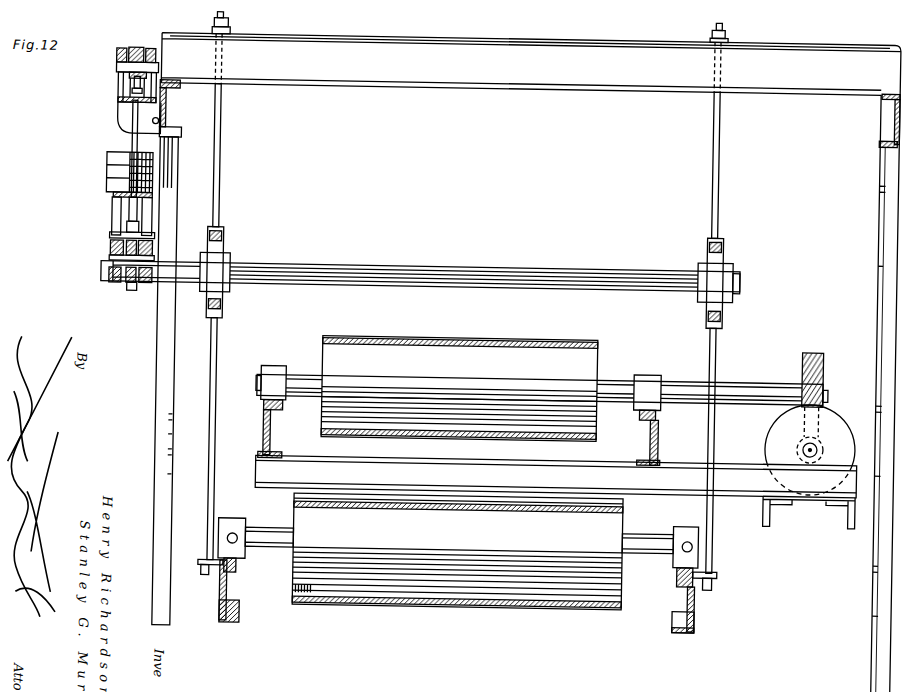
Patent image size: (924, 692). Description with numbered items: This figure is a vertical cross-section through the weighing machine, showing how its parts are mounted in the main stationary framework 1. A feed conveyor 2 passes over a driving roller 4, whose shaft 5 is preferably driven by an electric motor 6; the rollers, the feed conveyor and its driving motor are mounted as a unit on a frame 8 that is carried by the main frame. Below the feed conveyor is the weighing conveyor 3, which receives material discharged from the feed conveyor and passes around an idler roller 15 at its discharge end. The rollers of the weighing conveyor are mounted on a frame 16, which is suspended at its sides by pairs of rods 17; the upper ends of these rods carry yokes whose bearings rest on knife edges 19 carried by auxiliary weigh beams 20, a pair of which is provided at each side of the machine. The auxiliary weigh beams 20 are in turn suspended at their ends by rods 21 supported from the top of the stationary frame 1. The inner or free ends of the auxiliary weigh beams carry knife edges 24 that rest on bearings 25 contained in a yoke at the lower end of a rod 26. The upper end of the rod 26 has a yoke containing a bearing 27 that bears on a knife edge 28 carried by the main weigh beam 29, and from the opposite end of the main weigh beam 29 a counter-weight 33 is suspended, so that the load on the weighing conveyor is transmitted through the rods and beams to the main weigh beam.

The framework 1 is at (159, 379).
The feed conveyor 2 is at (428, 339).
The weighing conveyor 3 is at (298, 605).
The driving roller 4 is at (583, 372).
The shaft 5 is at (738, 382).
The electric motor 6 is at (844, 422).
The frame 8 is at (660, 437).
The idler roller 15 is at (615, 523).
The frame 16 is at (705, 613).
The rods 17 is at (217, 386).
The knife edges 19 is at (213, 295).
The auxiliary weigh beams 20 is at (127, 237).
The rods 21 is at (217, 168).
The knife edges 24 is at (108, 242).
The bearings 25 is at (109, 255).
The rod 26 is at (129, 150).
The bearing 27 is at (147, 55).
The knife edge 28 is at (114, 72).
The main weigh beam 29 is at (131, 54).
The counter-weight 33 is at (115, 175).